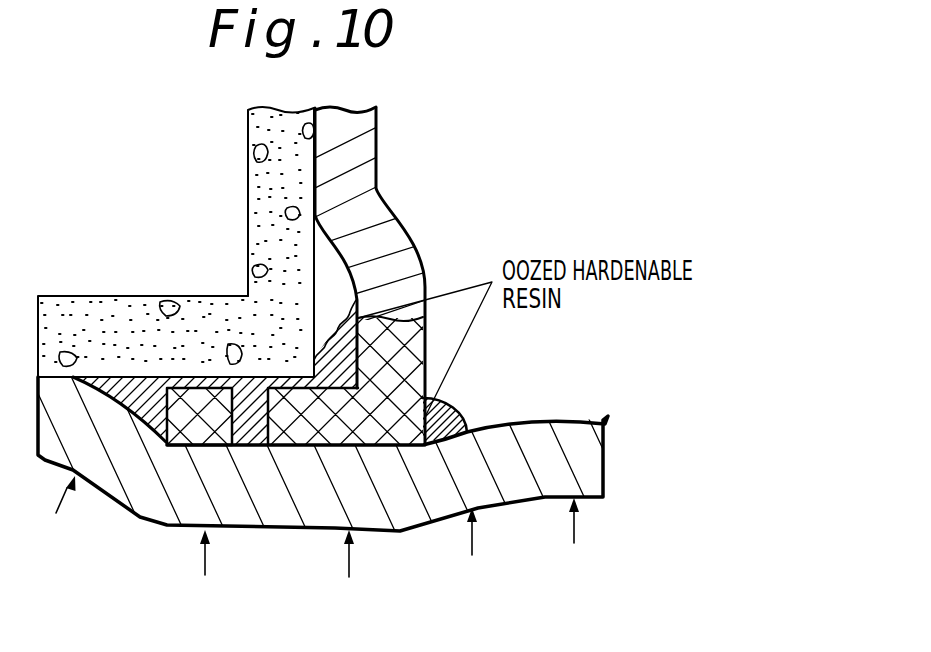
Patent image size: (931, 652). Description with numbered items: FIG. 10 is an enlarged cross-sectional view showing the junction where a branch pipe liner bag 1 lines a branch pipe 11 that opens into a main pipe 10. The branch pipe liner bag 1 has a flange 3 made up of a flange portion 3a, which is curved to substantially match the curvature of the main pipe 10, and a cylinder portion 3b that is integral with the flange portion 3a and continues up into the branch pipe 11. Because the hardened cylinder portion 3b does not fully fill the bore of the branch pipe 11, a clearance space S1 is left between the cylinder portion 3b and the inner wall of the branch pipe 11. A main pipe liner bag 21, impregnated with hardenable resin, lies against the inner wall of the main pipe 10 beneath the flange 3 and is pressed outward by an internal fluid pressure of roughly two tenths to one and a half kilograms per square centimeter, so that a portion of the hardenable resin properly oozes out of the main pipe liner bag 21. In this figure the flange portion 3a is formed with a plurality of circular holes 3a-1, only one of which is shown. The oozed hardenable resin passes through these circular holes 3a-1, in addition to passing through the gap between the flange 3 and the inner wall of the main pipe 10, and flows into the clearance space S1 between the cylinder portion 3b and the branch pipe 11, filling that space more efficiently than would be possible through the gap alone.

The branch pipe liner bag 1 is at (392, 150).
The clearance space S1 is at (333, 262).
The main pipe 10 is at (92, 293).
The branch pipe 11 is at (248, 168).
The flange 3 is at (289, 380).
The flange portion 3a is at (358, 424).
The cylinder portion 3b is at (390, 360).
The circular hole 3a-1 is at (243, 427).
The main pipe liner bag 21 is at (255, 530).